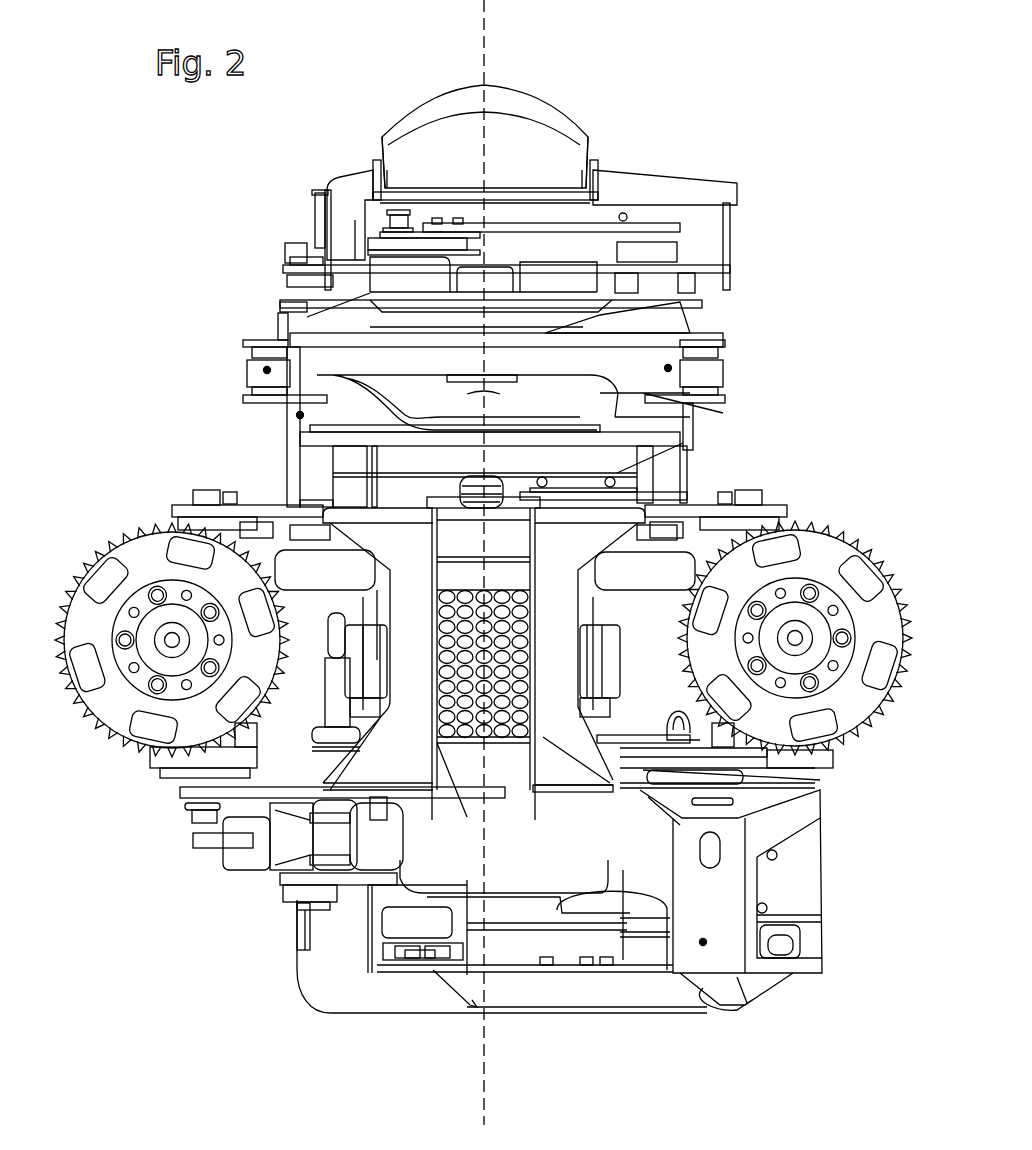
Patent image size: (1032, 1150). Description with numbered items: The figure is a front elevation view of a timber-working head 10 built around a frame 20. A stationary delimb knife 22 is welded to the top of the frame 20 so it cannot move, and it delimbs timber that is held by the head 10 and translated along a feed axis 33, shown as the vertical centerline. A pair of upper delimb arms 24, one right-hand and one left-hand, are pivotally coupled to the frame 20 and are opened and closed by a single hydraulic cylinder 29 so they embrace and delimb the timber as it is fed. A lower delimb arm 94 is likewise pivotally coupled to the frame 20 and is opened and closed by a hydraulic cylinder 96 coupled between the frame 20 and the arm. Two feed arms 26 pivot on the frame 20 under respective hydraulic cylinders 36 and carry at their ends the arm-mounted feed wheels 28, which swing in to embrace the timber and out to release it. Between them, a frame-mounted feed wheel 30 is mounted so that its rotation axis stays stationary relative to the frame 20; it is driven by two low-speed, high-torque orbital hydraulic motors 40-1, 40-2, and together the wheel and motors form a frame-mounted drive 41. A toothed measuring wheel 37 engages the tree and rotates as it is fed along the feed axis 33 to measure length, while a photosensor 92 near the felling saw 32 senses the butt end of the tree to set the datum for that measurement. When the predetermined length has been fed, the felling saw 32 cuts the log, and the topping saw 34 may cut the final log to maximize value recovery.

The head 10 is at (218, 195).
The frame 20 is at (523, 830).
The stationary delimb knife 22 is at (522, 103).
The upper delimb arms 24 is at (303, 320).
The feed arms 26 is at (150, 772).
The arm-mounted feed wheels 28 is at (108, 545).
The hydraulic cylinder 29 is at (720, 362).
The frame-mounted feed wheel 30 is at (493, 727).
The felling saw 32 is at (562, 930).
The feed axis 33 is at (490, 30).
The topping saw 34 is at (655, 232).
The hydraulic cylinders 36 is at (295, 585).
The toothed measuring wheel 37 is at (493, 482).
The hydraulic motor 40-1 is at (360, 673).
The hydraulic motor 40-2 is at (613, 670).
The frame-mounted drive 41 is at (350, 603).
The photosensor 92 is at (438, 973).
The lower delimb arm 94 is at (195, 848).
The hydraulic cylinder 96 is at (373, 847).